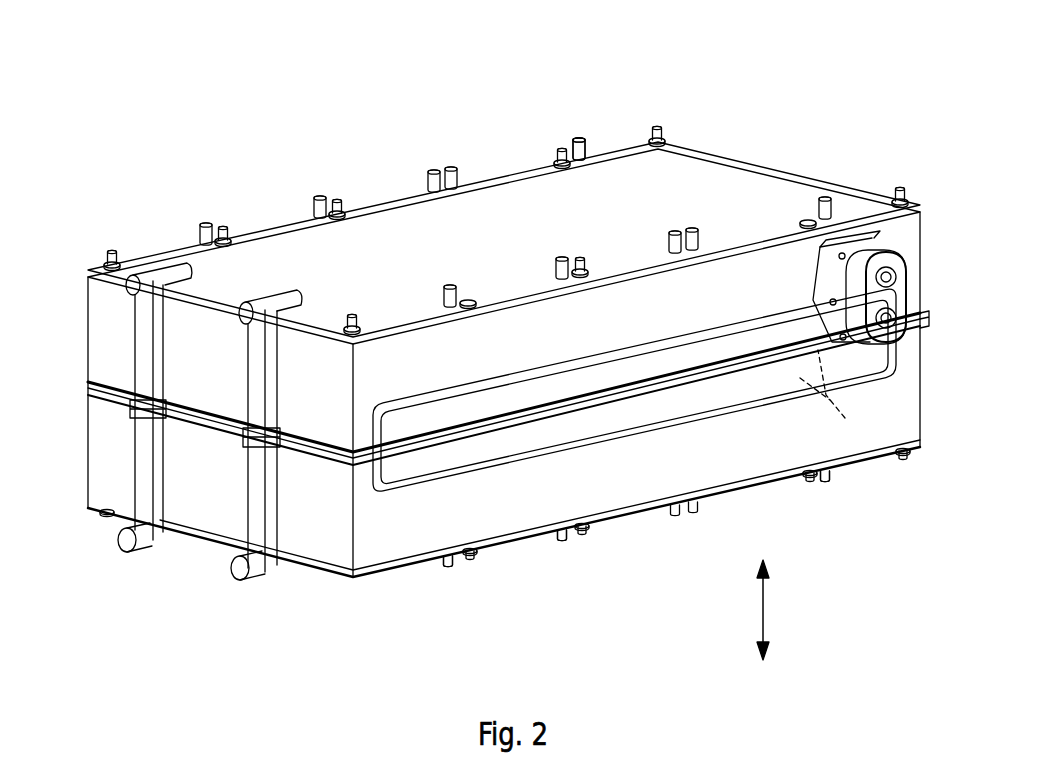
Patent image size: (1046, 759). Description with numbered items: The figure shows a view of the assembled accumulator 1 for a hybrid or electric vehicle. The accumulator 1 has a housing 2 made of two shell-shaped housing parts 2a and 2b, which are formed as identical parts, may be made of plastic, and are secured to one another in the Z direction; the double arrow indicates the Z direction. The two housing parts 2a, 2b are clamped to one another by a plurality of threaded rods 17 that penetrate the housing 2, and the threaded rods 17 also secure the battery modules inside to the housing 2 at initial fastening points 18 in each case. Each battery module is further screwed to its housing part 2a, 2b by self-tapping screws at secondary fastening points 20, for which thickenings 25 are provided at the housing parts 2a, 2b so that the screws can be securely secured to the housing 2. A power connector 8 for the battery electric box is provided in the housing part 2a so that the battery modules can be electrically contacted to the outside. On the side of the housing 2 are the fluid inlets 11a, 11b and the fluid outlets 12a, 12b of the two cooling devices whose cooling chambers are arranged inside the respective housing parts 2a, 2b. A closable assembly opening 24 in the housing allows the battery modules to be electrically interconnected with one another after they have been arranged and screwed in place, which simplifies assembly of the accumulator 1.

The accumulator 1 is at (850, 134).
The housing 2 is at (508, 293).
The housing part 2a is at (708, 148).
The housing part 2b is at (660, 483).
The power connector 8 is at (897, 272).
The fluid inlet 11a is at (128, 288).
The fluid inlet 11b is at (118, 548).
The fluid outlet 12a is at (244, 317).
The fluid outlet 12b is at (233, 574).
The threaded rod 17 is at (108, 263).
The initial fastening point 18 is at (110, 248).
The secondary fastening point 20 is at (434, 178).
The closable assembly opening 24 is at (835, 395).
The thickening 25 is at (210, 240).
The Z direction Z is at (770, 612).